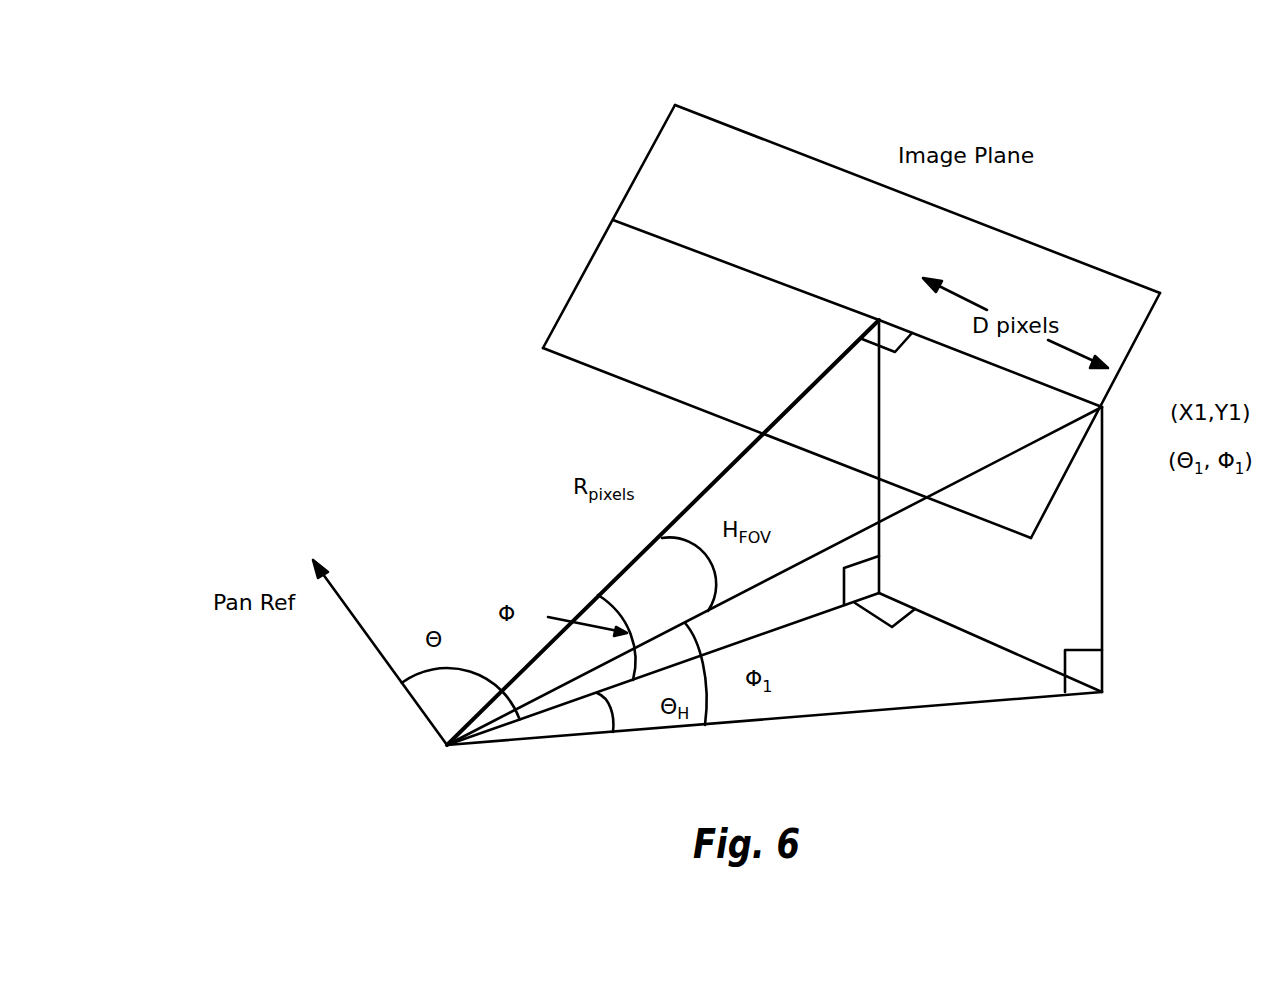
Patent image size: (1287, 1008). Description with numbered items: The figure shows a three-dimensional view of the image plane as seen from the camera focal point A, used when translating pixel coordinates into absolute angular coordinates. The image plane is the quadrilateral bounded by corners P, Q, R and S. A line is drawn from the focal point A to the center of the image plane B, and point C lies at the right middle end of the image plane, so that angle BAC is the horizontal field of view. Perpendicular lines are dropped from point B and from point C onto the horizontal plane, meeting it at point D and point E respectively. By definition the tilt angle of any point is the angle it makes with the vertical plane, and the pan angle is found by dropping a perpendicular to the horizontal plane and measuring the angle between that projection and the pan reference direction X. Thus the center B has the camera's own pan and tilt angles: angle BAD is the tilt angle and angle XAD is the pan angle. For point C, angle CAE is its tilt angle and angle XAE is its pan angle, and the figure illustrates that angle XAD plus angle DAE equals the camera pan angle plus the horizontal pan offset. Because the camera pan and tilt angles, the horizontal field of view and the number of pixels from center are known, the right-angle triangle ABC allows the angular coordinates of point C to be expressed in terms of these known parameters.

The focal point A is at (658, 551).
The center of the image plane B is at (887, 442).
The right middle end point of the image plane C is at (788, 571).
The perpendicular projection of point B on the horizontal plane D is at (774, 650).
The perpendicular projection of point C on the horizontal plane E is at (783, 697).
The image plane corner P is at (851, 211).
The image plane corner Q is at (771, 379).
The image plane corner R is at (990, 443).
The image plane corner S is at (1114, 400).
The pan reference direction X is at (375, 638).